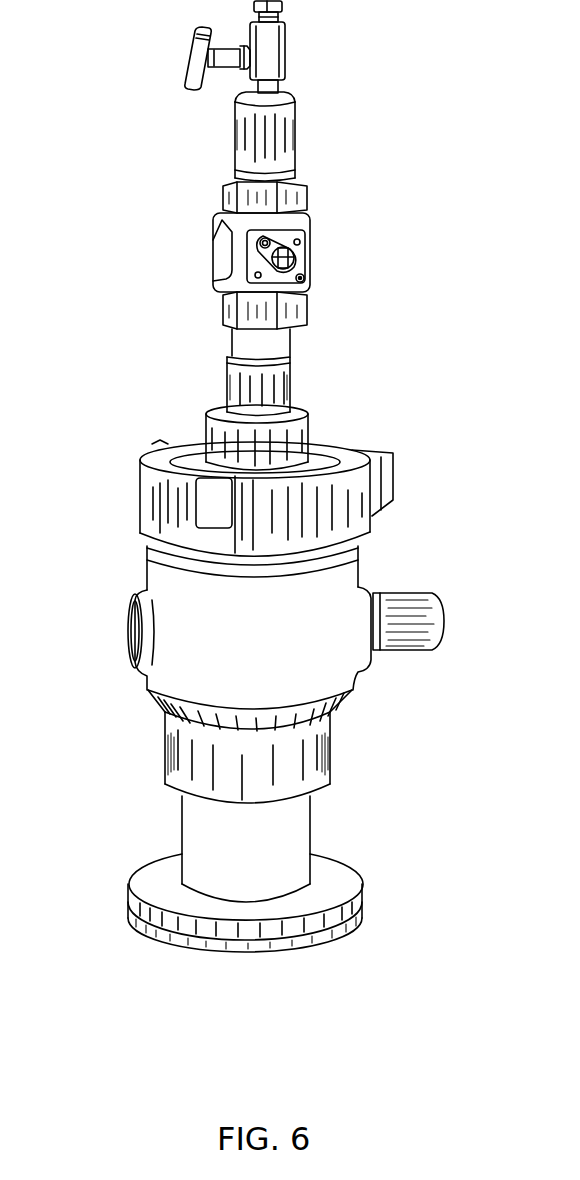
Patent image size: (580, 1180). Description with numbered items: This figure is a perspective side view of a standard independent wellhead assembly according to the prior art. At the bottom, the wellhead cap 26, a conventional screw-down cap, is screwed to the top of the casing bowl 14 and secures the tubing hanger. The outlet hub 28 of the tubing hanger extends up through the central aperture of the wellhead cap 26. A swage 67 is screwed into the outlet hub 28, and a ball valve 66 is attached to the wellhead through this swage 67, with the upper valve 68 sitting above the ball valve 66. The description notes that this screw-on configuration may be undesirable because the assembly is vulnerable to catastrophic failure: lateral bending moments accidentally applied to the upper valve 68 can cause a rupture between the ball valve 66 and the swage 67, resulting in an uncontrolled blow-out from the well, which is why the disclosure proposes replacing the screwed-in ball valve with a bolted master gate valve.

The casing bowl 14 is at (322, 688).
The wellhead cap 26 is at (330, 504).
The outlet hub 28 is at (222, 437).
The ball valve 66 is at (255, 253).
The swage 67 is at (280, 374).
The upper valve 68 is at (285, 112).